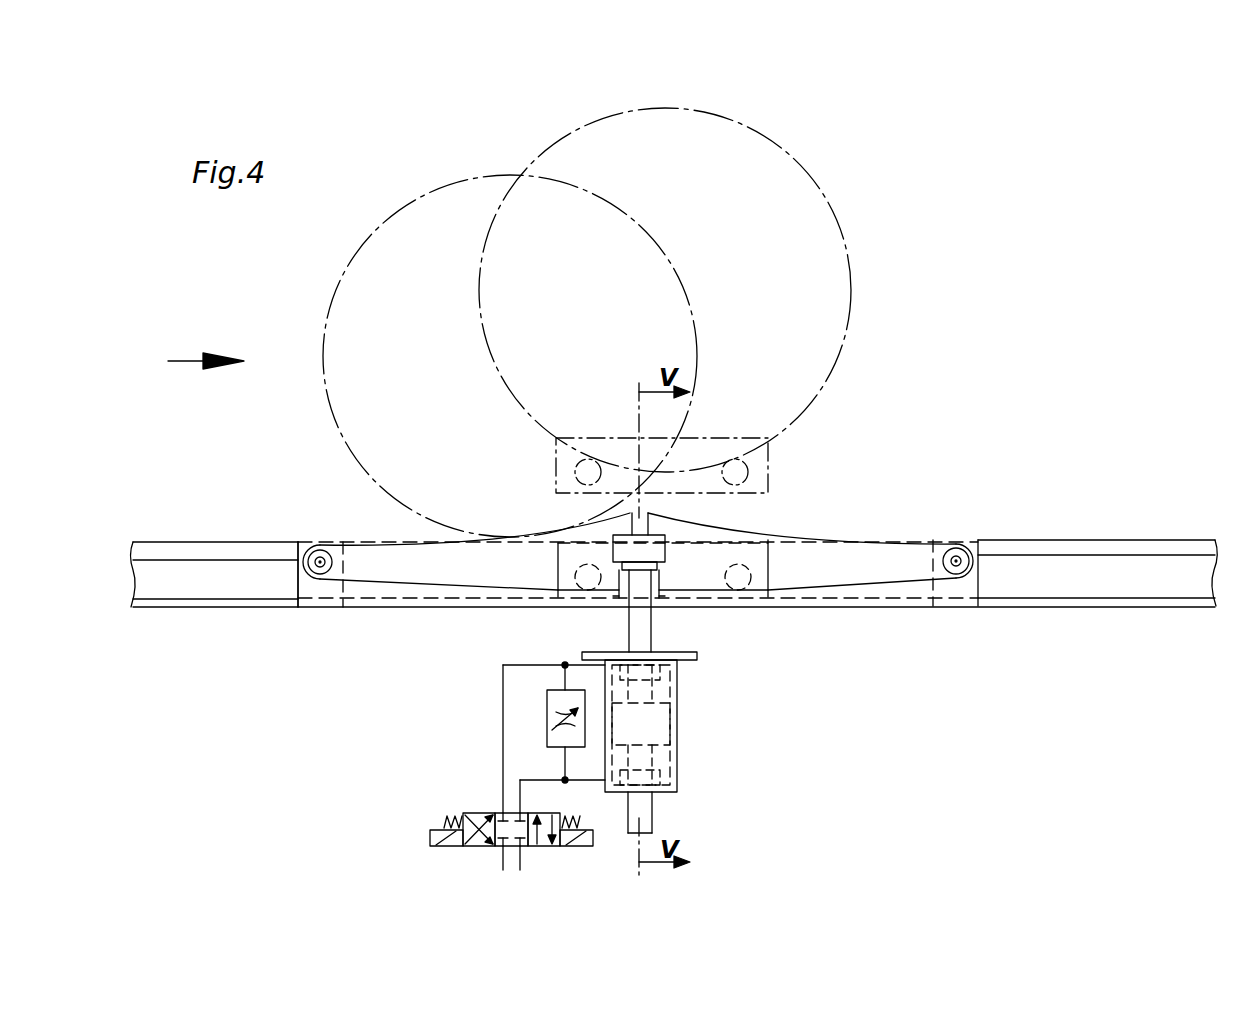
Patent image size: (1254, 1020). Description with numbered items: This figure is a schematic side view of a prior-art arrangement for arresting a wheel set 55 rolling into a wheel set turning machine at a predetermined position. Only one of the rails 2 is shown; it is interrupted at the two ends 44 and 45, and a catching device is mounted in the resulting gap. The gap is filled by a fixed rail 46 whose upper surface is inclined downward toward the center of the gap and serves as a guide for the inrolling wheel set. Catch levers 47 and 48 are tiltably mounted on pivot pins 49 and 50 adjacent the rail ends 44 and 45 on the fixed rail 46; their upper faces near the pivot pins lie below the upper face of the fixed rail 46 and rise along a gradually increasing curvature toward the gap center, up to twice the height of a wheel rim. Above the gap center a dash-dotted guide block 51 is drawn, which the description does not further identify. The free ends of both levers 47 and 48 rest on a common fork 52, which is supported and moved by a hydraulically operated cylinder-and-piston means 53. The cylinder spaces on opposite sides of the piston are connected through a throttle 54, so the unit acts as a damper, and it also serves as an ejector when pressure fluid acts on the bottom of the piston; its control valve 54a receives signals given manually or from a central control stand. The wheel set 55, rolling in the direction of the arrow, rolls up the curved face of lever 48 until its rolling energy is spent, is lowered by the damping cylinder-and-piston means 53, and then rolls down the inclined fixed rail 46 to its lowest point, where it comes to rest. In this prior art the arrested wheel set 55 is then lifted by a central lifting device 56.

The rails 2 is at (181, 562).
The rail end 44 is at (980, 565).
The rail end 45 is at (297, 572).
The fixed rail 46 is at (833, 585).
The catch lever 47 is at (853, 560).
The catch lever 48 is at (362, 558).
The pivot pin 49 is at (318, 555).
The pivot pin 50 is at (958, 563).
The guide block 51 is at (752, 528).
The common fork 52 is at (613, 558).
The cylinder-and-piston means 53 is at (660, 710).
The throttle 54 is at (566, 730).
The control valve 54a is at (490, 816).
The wheel set 55 is at (365, 313).
The central lifting device 56 is at (692, 572).